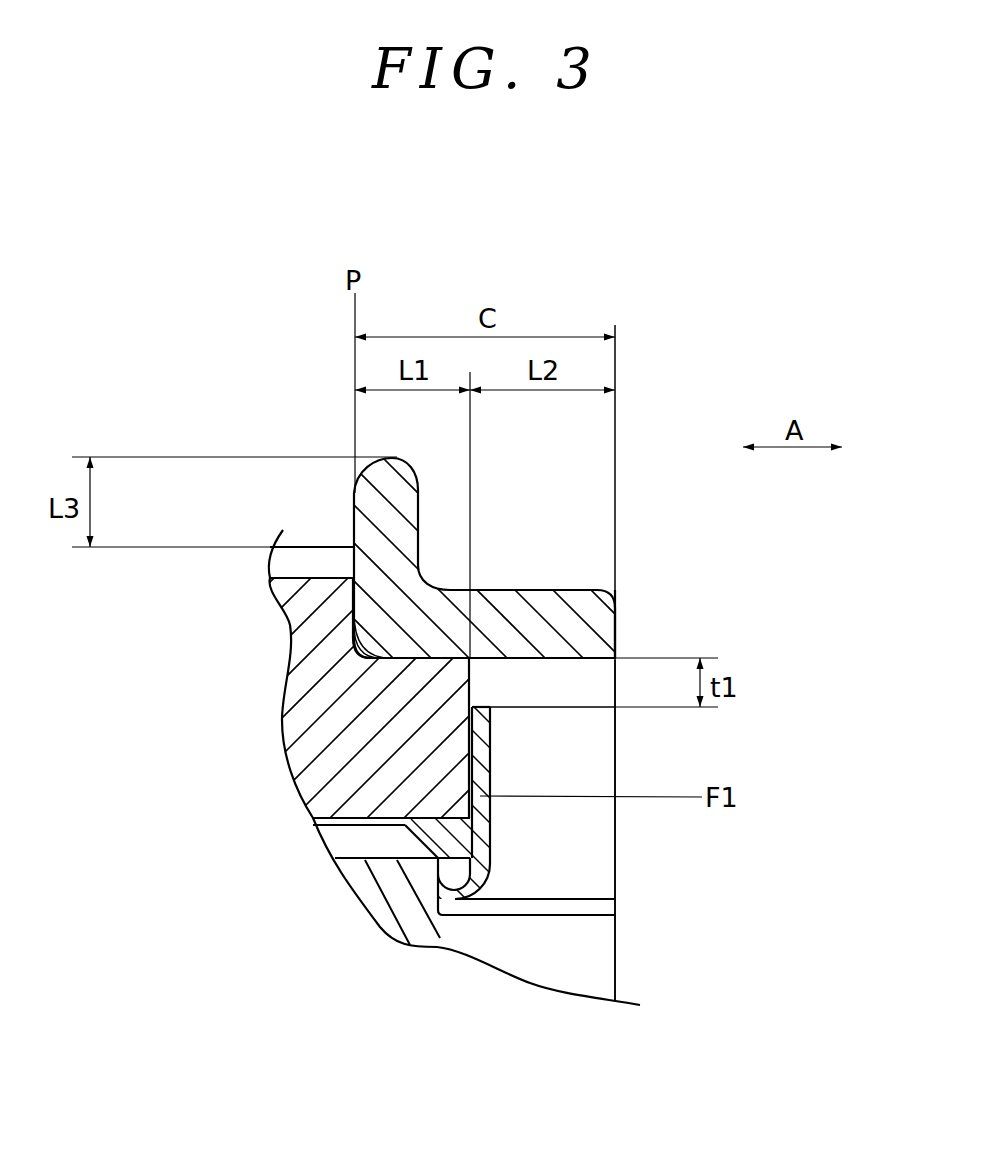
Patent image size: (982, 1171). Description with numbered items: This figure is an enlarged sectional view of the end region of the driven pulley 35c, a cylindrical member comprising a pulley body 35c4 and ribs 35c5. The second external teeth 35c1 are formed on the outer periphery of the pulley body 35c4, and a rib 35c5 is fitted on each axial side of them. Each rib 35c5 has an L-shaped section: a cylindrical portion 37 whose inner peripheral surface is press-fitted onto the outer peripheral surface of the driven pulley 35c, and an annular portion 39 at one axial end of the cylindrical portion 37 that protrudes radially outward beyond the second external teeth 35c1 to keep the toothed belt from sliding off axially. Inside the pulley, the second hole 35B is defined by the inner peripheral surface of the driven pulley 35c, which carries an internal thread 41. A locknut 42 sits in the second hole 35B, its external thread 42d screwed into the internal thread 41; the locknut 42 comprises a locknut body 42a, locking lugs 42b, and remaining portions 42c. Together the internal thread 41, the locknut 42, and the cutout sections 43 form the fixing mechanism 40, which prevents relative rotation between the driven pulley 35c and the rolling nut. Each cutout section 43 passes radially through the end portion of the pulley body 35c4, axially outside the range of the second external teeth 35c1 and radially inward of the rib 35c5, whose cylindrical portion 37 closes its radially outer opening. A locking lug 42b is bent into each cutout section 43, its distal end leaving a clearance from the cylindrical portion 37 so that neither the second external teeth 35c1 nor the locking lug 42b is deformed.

The driven pulley 35c is at (360, 738).
The pulley body 35c4 is at (327, 717).
The second external teeth 35c1 is at (313, 555).
The rib 35c5 is at (652, 598).
The second hole 35B is at (412, 862).
The cylindrical portion 37 is at (550, 607).
The annular portion 39 is at (383, 508).
The fixing mechanism 40 is at (735, 822).
The internal thread 41 is at (398, 856).
The locknut 42 is at (481, 849).
The locknut body 42a is at (410, 922).
The locking lug 42b is at (480, 762).
The remaining portion 42c is at (590, 957).
The external thread 42d is at (352, 840).
The cutout section 43 is at (507, 680).